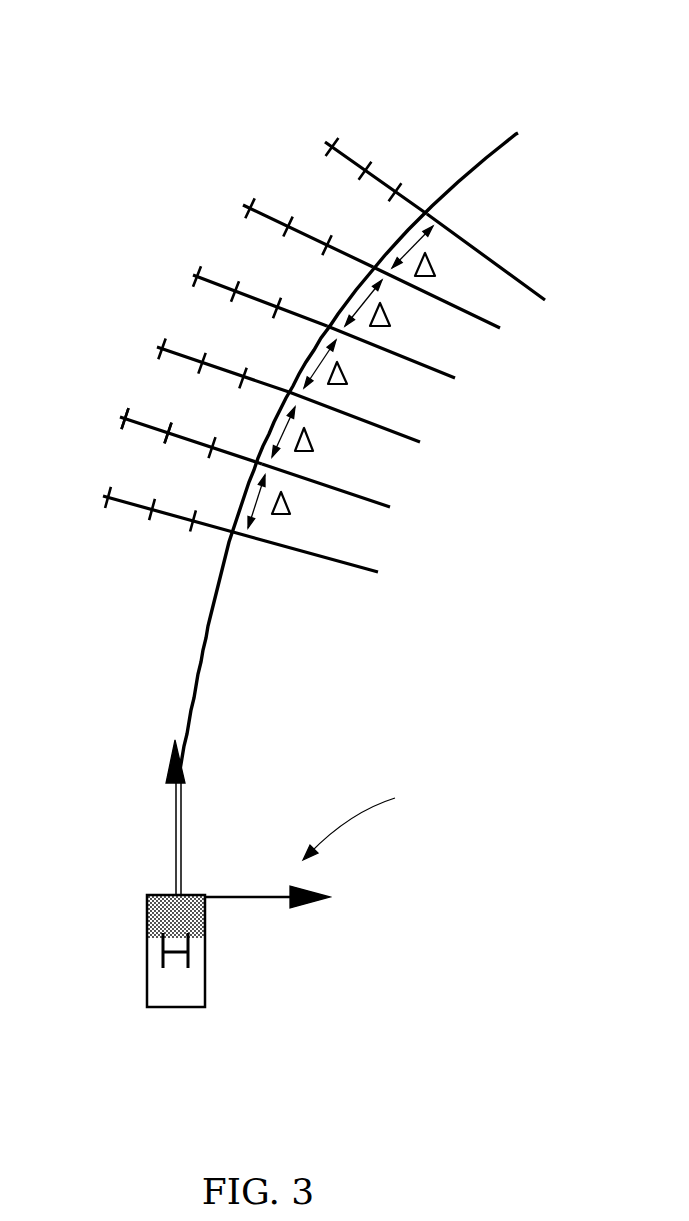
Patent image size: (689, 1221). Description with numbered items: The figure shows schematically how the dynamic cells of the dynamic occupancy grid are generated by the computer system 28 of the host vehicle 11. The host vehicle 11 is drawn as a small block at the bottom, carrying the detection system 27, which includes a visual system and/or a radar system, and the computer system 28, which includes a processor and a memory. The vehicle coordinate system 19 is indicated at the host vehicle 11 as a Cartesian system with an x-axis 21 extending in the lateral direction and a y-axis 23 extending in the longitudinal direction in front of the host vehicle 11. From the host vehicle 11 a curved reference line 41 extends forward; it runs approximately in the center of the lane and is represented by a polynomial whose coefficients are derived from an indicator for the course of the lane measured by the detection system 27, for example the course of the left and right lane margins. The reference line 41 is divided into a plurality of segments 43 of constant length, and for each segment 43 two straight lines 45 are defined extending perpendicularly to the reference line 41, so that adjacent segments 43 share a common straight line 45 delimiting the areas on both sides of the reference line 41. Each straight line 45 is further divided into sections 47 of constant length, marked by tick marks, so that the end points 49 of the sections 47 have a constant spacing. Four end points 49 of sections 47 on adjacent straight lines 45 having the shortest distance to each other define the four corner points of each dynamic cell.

The host vehicle 11 is at (175, 994).
The vehicle coordinate system 19 is at (367, 821).
The x-axis 21 is at (272, 898).
The y-axis 23 is at (175, 820).
The detection system 27 is at (158, 915).
The computer system 28 is at (193, 918).
The reference line 41 is at (480, 160).
The segments 43 is at (393, 240).
The straight lines 45 is at (400, 433).
The sections 47 is at (230, 460).
The end points 49 is at (170, 412).